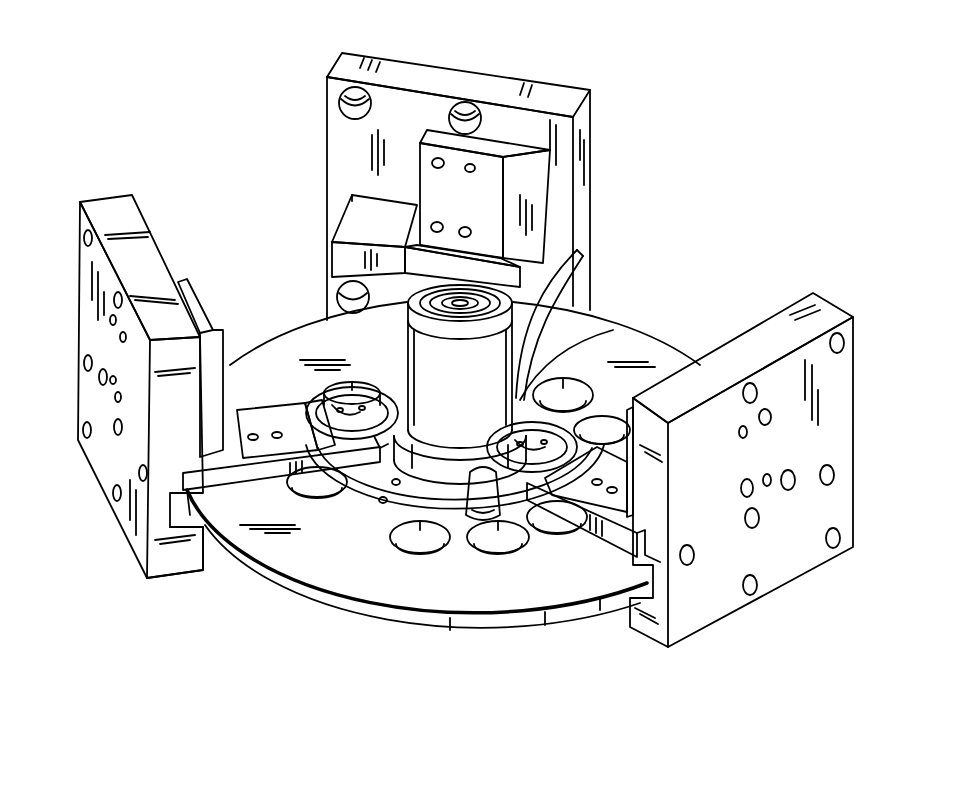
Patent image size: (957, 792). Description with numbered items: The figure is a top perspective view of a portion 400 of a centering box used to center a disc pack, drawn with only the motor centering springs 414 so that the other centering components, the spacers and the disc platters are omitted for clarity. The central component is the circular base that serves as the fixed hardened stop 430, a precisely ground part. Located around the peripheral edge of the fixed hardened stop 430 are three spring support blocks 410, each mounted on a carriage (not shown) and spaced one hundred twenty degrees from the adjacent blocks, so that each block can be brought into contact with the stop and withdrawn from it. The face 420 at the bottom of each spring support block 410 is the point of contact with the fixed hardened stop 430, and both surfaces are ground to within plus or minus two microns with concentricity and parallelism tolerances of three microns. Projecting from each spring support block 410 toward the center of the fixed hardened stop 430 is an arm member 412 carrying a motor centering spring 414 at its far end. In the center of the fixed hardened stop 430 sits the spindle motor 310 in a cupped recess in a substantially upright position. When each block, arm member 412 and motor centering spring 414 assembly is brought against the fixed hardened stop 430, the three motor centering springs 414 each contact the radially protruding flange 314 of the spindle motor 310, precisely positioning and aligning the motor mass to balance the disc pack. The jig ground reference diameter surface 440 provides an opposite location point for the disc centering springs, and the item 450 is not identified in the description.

The portion of a centering box 400 is at (683, 222).
The spindle motor 310 is at (500, 357).
The radially protruding flange 314 is at (605, 333).
The spring support block 410 is at (107, 210).
The arm member 412 is at (253, 420).
The motor centering spring 414 is at (362, 393).
The face 420 is at (165, 560).
The circular base / fixed hardened stop 430 is at (243, 567).
The jig ground reference diameter surface 440 is at (540, 203).
The flange ring 450 is at (430, 487).